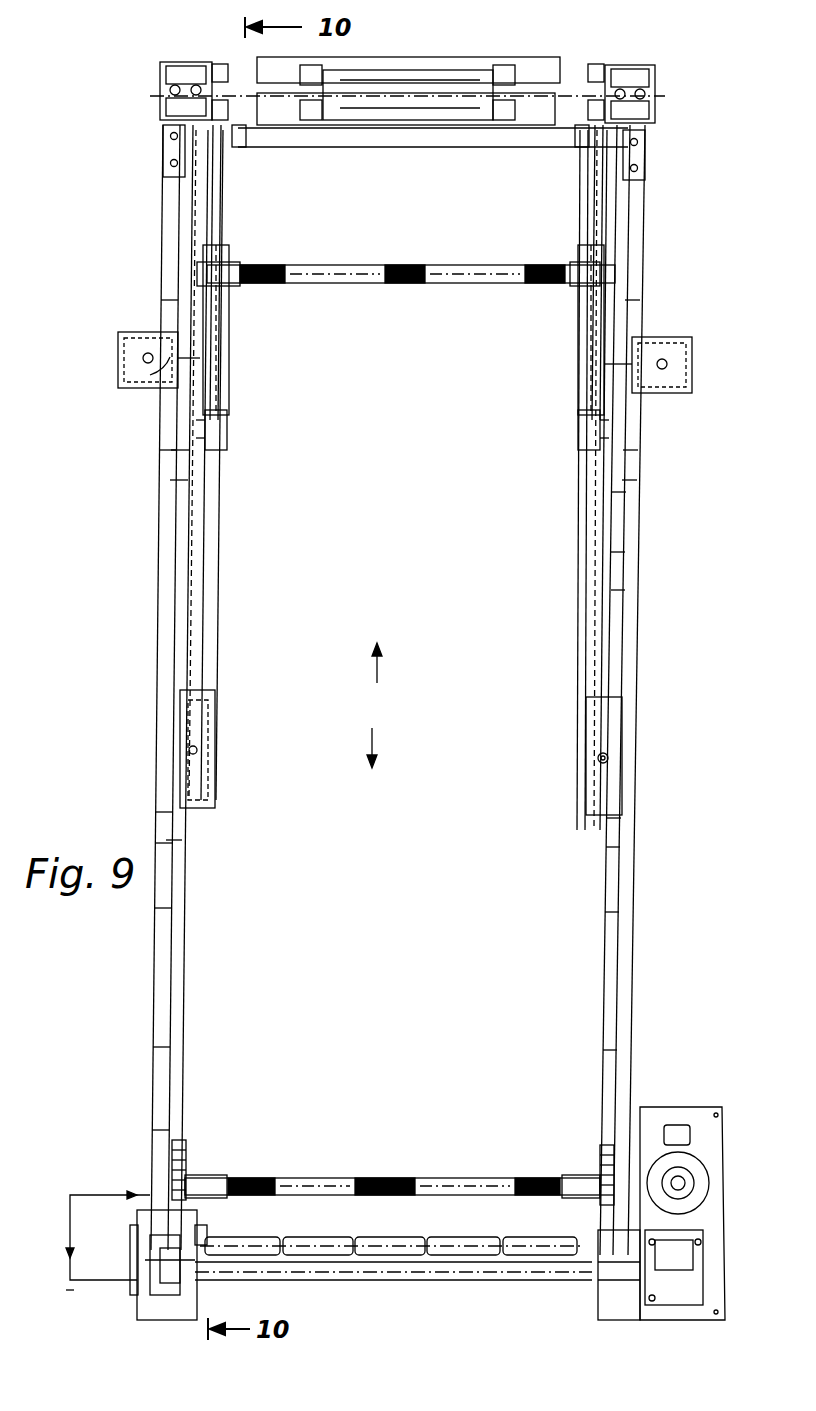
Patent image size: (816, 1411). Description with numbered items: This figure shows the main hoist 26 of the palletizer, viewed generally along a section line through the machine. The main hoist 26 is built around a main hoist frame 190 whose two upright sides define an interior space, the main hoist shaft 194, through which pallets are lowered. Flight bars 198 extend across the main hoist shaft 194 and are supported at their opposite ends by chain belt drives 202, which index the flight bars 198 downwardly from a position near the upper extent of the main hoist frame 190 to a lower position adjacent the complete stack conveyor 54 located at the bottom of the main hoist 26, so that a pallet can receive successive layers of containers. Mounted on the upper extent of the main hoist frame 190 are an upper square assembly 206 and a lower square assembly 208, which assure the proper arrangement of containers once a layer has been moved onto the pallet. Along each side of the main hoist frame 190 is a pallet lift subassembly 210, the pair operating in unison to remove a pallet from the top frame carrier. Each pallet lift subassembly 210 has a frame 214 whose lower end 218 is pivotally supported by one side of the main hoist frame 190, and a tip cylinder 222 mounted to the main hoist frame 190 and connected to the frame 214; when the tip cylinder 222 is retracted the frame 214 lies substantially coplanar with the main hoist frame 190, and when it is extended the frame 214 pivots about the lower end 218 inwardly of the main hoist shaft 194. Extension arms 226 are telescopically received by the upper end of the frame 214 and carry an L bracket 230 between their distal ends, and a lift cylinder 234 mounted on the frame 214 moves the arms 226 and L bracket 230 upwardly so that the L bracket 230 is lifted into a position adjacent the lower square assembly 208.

The main hoist 26 is at (645, 868).
The complete stack conveyor 54 is at (463, 1253).
The main hoist frame 190 is at (635, 530).
The main hoist shaft 194 is at (373, 705).
The flight bars 198 is at (485, 283).
The chain belt drives 202 is at (183, 1143).
The upper square assembly 206 is at (228, 62).
The lower square assembly 208 is at (235, 136).
The pallet lift subassembly 210 is at (238, 424).
The frame 214 is at (210, 633).
The lower end 218 is at (190, 750).
The tip cylinder 222 is at (155, 337).
The extension arms 226 is at (223, 216).
The L bracket 230 is at (258, 100).
The lift cylinder 234 is at (210, 318).